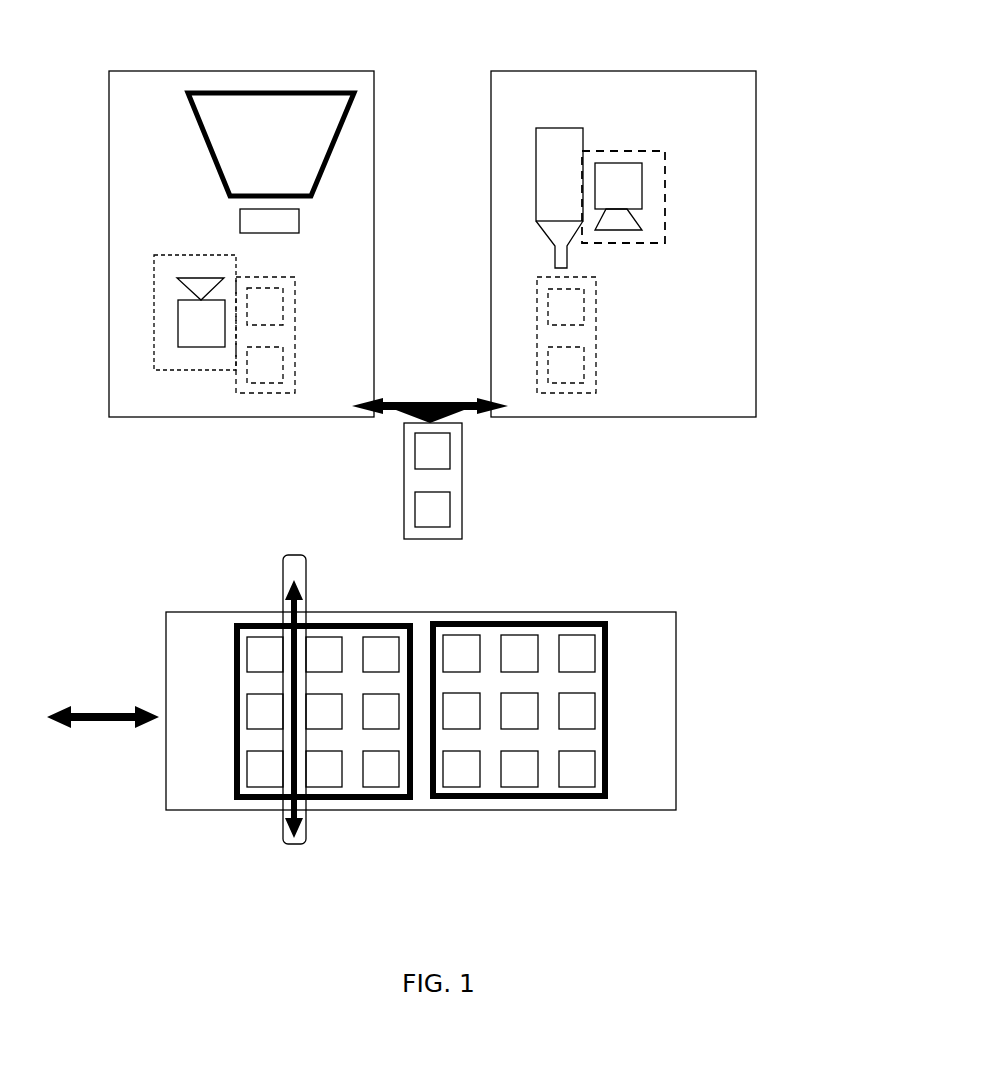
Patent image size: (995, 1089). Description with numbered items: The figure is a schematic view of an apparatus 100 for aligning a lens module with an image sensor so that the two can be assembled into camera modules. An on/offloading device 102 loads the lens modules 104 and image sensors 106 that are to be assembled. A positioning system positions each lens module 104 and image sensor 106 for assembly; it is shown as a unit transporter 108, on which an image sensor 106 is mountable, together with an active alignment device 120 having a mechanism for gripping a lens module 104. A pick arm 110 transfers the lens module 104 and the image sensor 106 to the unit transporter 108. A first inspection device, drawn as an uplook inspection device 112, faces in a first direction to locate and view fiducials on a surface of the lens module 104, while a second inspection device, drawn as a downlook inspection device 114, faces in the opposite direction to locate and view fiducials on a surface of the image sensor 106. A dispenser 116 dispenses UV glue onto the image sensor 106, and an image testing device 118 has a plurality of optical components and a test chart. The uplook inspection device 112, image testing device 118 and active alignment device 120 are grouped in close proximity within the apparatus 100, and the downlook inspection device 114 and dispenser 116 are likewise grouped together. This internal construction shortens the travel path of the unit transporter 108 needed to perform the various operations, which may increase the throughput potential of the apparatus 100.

The apparatus 100 is at (776, 571).
The on/offloading device 102 is at (578, 606).
The lens module 104 is at (409, 452).
The image sensor 106 is at (409, 506).
The unit transporter 108 is at (303, 364).
The pick arm 110 is at (280, 575).
The uplook inspection device 112 is at (174, 354).
The downlook inspection device 114 is at (646, 172).
The dispenser 116 is at (562, 126).
The image testing device 118 is at (280, 92).
The active alignment device 120 is at (302, 229).